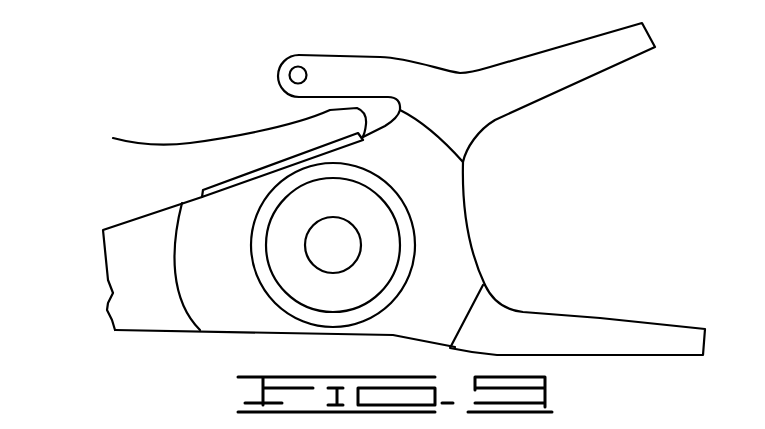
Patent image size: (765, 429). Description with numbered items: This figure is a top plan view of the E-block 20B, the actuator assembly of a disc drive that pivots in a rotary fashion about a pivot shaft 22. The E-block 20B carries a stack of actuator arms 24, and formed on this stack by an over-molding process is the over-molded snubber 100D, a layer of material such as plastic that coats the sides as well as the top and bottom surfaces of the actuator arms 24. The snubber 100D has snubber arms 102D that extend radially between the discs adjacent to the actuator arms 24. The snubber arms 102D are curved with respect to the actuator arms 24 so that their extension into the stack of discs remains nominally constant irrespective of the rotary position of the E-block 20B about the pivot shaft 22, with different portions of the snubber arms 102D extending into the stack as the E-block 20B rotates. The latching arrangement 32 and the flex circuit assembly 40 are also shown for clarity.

The E-block 20B is at (193, 88).
The latching arrangement 32 is at (323, 65).
The flex circuit assembly 40 is at (190, 143).
The actuator arms 24 is at (150, 237).
The pivot shaft 22 is at (343, 247).
The snubber arms 102D is at (200, 285).
The over-molded snubber 100D is at (245, 315).